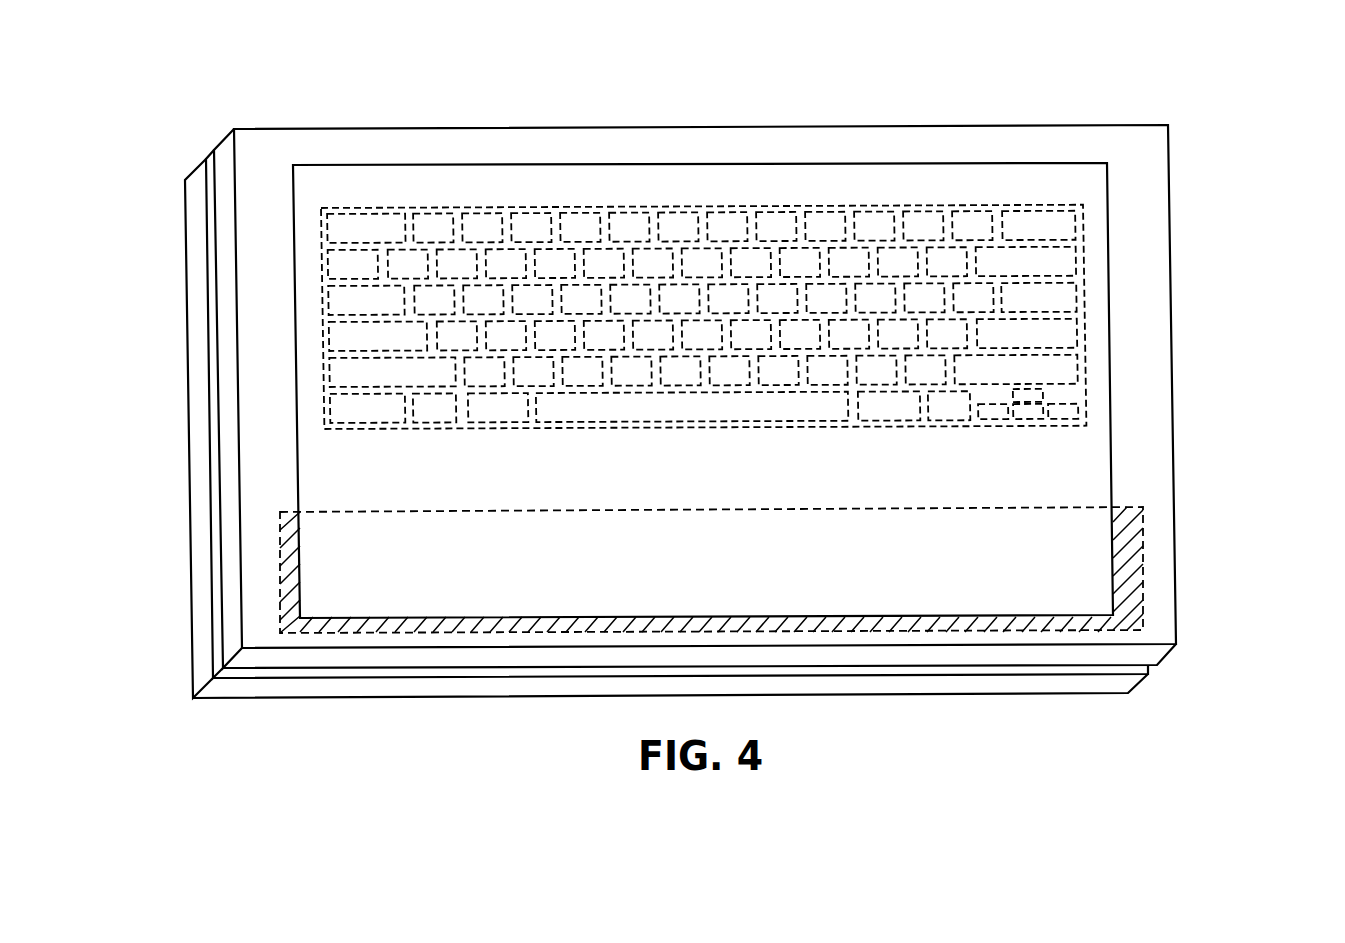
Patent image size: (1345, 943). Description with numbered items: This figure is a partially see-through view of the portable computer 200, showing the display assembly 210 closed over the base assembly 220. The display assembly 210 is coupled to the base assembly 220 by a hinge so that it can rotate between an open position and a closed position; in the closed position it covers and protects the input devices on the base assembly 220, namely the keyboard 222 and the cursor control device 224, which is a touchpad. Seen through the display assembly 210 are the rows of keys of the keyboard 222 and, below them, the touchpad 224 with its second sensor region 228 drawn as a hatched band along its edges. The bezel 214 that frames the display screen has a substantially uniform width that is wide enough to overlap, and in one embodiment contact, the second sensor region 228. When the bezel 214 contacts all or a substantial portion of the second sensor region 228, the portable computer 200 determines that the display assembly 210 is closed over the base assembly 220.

The portable computer 200 is at (188, 111).
The display assembly 210 is at (223, 158).
The bezel 214 is at (1157, 469).
The base assembly 220 is at (195, 232).
The keyboard 222 is at (1035, 296).
The cursor control device 224 is at (736, 587).
The second sensor region 228 is at (1143, 585).